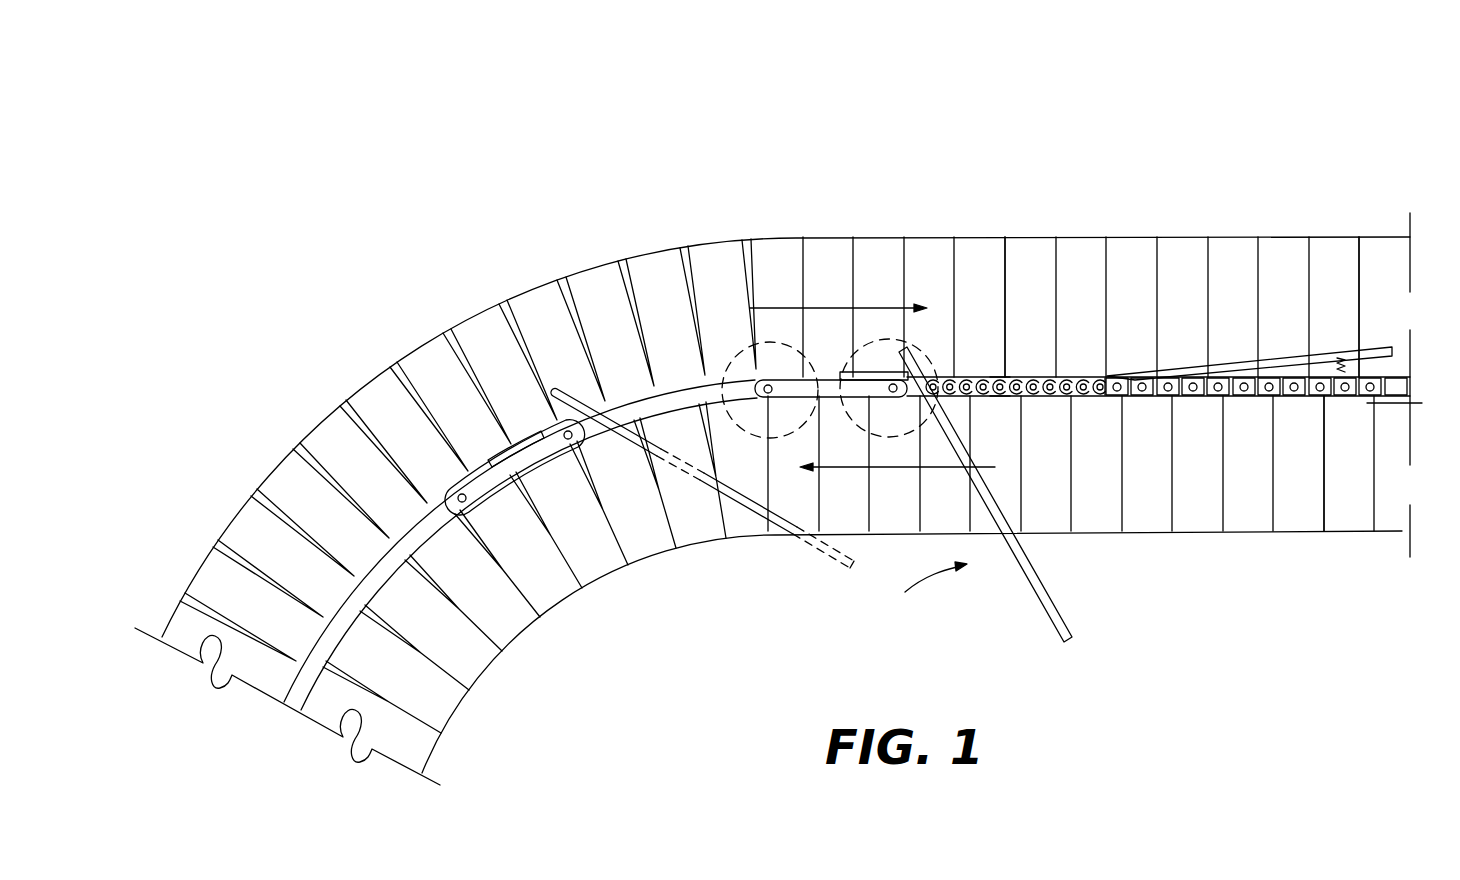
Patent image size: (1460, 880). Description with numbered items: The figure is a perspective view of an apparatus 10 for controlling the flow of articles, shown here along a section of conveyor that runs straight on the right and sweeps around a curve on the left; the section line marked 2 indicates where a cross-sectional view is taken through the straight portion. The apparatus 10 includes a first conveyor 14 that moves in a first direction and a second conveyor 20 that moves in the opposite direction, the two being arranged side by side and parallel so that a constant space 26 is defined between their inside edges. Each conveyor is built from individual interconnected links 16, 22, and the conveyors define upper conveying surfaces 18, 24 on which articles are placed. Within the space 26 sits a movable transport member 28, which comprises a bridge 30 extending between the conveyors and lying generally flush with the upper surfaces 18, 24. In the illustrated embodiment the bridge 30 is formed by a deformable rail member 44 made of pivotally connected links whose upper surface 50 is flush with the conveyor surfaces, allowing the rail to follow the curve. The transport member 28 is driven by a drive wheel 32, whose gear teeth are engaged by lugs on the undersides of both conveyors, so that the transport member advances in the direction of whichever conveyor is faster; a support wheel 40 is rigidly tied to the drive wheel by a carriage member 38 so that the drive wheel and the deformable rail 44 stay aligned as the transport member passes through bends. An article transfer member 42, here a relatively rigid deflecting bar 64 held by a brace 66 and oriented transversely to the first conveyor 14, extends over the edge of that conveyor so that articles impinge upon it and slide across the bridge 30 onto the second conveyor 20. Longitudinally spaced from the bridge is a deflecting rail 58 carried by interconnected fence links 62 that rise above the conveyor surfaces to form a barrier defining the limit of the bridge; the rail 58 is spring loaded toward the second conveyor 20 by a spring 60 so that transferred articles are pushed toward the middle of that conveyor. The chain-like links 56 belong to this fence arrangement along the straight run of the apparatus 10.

The apparatus 10 is at (938, 98).
The first conveyor 14 is at (1190, 533).
The links 16 is at (1297, 505).
The upper conveying surface 18 is at (1350, 502).
The second conveyor 20 is at (1290, 245).
The links 22 is at (1340, 258).
The upper conveying surface 24 is at (1378, 250).
The space 26 is at (665, 393).
The movable transport member 28 is at (977, 256).
The bridge 30 is at (1047, 400).
The drive wheel 32 is at (863, 358).
The carriage member 38 is at (490, 478).
The support wheel 40 is at (745, 418).
The article transfer member 42 is at (897, 541).
The deformable rail member 44 is at (1108, 378).
The upper surface 50 is at (1000, 377).
The chain link 56 is at (1150, 400).
The deflecting rail 58 is at (1183, 365).
The spring 60 is at (1353, 370).
The fence links 62 is at (1250, 400).
The deflecting bar 64 is at (610, 397).
The brace 66 is at (530, 432).
The section line 2 is at (1406, 385).